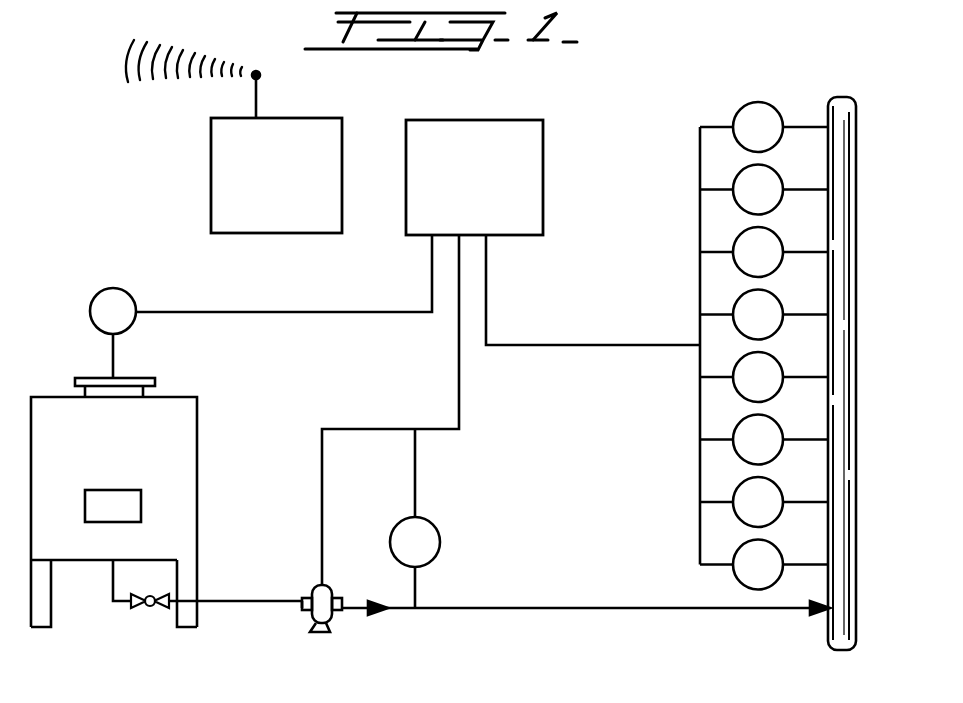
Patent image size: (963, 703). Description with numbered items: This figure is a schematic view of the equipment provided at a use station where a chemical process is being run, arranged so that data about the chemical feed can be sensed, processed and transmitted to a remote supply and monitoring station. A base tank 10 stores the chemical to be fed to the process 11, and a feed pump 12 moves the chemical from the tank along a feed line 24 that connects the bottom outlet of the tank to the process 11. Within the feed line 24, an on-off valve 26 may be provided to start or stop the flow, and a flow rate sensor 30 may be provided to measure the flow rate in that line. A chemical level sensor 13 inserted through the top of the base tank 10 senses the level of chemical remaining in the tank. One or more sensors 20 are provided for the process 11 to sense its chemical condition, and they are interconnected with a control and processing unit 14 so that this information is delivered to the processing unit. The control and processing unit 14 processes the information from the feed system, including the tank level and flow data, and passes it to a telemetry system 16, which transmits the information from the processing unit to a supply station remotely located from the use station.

The base tank 10 is at (170, 486).
The process 11 is at (855, 470).
The feed pump 12 is at (334, 622).
The chemical level sensor 13 is at (92, 313).
The control and processing unit 14 is at (541, 133).
The telemetry system 16 is at (336, 136).
The sensors 20 is at (765, 117).
The feed line 24 is at (240, 604).
The on-off valve 26 is at (148, 607).
The flow rate sensor 30 is at (432, 525).